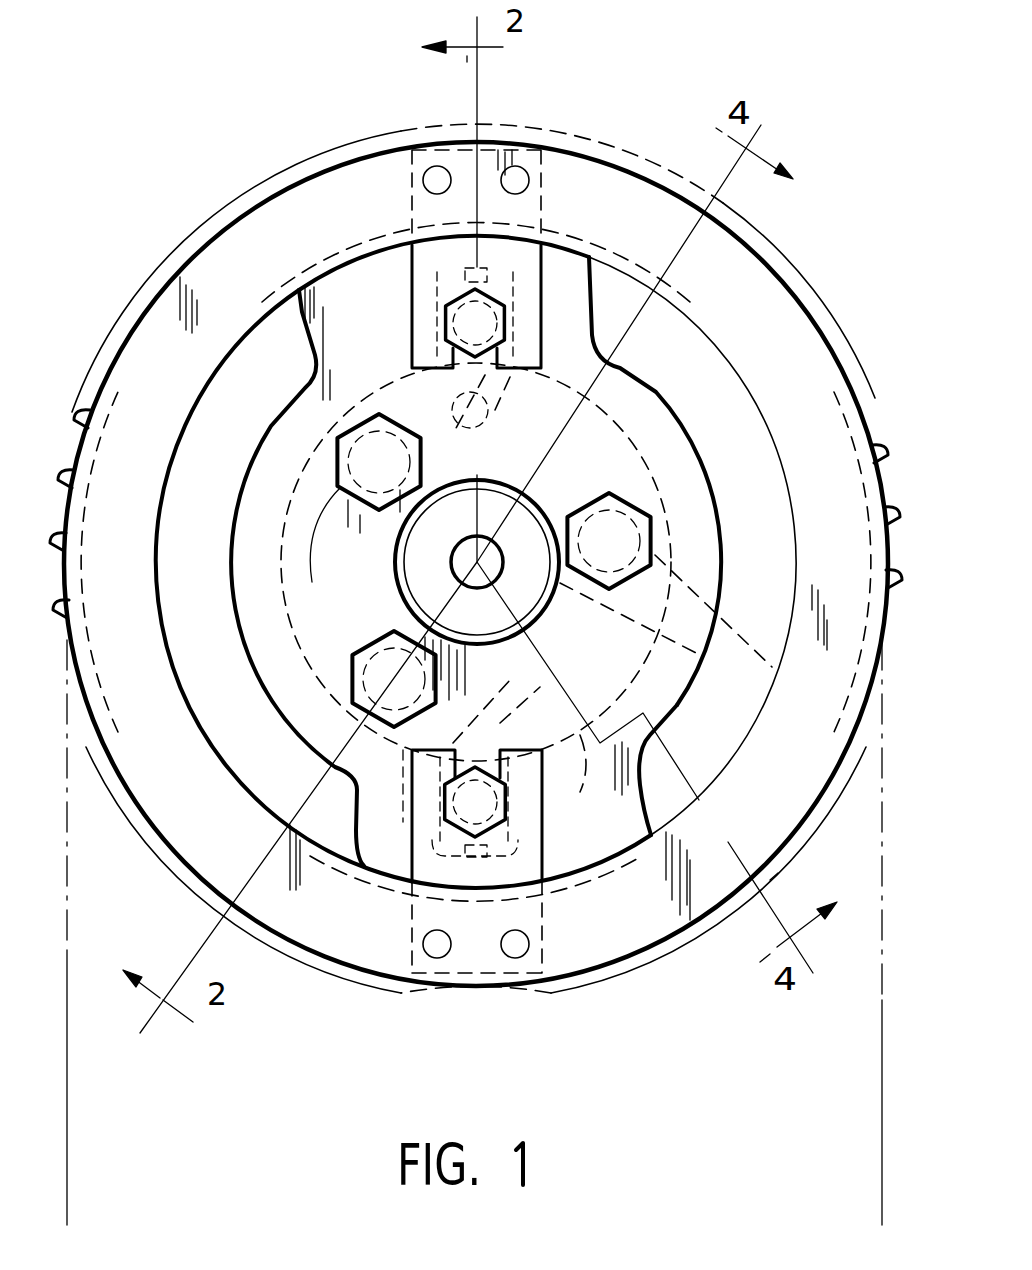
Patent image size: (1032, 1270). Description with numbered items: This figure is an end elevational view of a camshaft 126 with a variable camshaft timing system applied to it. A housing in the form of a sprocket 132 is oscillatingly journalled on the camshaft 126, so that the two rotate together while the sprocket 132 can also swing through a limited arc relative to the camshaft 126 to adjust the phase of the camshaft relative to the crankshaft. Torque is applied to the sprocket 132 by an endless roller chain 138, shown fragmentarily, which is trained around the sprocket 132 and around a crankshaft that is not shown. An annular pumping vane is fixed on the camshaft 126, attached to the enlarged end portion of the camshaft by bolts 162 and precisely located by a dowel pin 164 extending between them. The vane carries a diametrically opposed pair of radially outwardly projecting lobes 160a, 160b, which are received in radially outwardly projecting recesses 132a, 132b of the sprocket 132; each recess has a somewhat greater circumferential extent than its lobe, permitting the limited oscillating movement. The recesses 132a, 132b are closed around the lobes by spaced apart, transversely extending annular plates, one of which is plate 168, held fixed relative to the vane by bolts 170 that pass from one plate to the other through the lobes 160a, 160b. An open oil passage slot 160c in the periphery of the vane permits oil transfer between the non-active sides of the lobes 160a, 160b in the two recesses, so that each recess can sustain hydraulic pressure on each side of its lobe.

The camshaft 126 is at (394, 563).
The sprocket 132 is at (806, 355).
The recess 132a is at (305, 272).
The recess 132b is at (682, 814).
The endless roller chain 138 is at (880, 1012).
The lobe 160a is at (547, 180).
The lobe 160b is at (560, 890).
The open oil passage slot 160c is at (772, 667).
The bolts 162 is at (640, 535).
The dowel pin 164 is at (473, 516).
The annular plate 168 is at (659, 393).
The bolts 170 is at (485, 310).